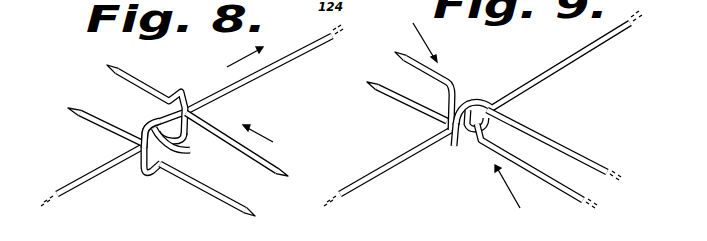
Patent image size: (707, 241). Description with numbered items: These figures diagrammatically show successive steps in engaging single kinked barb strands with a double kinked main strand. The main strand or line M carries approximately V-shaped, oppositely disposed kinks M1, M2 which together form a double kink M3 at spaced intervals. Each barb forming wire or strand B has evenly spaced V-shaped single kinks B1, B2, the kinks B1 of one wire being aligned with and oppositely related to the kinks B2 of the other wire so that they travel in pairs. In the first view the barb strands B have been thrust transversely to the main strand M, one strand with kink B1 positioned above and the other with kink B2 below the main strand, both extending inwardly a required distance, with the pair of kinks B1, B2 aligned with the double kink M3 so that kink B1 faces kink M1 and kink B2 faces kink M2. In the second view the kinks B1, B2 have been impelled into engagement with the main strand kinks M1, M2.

In FIG. 8, the barb forming wire or strand B is at (197, 181).
In FIG. 8, the kink of barb strand B1 is at (182, 89).
In FIG. 9, the kink of barb strand B1 is at (460, 136).
In FIG. 8, the kink of barb strand B2 is at (145, 174).
In FIG. 9, the kink of barb strand B2 is at (456, 91).
In FIG. 8, the main strand or line M is at (254, 75).
In FIG. 9, the main strand or line M is at (575, 58).
In FIG. 8, the kink in main strand M1 is at (183, 141).
In FIG. 9, the kink in main strand M1 is at (510, 117).
In FIG. 8, the kink in main strand M2 is at (182, 147).
In FIG. 9, the kink in main strand M2 is at (451, 112).
In FIG. 8, the double kink M3 is at (147, 117).